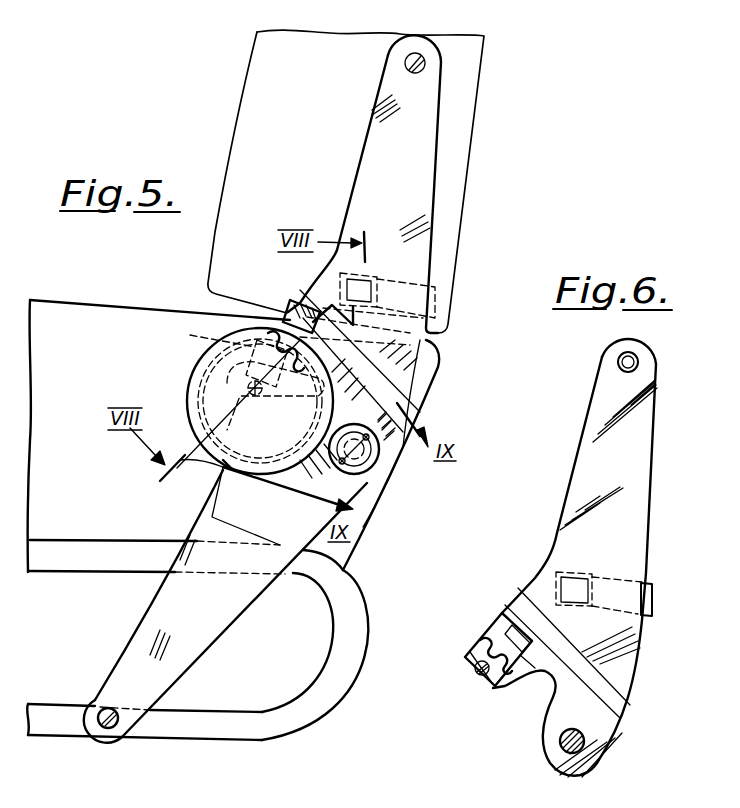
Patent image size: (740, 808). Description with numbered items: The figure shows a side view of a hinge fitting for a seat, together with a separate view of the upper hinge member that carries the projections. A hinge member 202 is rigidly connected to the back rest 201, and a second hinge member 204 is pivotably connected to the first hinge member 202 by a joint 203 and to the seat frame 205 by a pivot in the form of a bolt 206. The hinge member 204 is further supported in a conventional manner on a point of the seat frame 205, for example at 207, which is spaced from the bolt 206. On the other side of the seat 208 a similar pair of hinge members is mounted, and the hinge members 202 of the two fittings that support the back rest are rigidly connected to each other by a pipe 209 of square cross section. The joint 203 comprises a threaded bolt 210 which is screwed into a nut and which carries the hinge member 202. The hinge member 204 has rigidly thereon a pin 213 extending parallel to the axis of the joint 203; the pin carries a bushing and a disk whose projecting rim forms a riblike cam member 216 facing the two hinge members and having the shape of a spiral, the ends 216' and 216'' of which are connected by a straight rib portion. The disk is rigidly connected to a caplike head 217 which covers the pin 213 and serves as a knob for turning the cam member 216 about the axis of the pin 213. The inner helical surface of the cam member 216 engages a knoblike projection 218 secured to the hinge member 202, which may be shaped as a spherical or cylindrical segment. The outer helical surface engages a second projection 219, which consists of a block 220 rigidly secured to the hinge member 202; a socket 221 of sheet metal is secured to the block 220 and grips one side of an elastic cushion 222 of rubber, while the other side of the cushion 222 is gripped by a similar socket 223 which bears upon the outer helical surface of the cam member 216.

In FIG. 5, the back rest 201 is at (255, 115).
In FIG. 5, the hinge member 202 is at (420, 145).
In FIG. 6, the hinge member 202 is at (590, 452).
In FIG. 5, the joint 203 is at (388, 470).
In FIG. 5, the hinge member 204 is at (230, 615).
In FIG. 5, the seat frame 205 is at (238, 712).
In FIG. 5, the bolt 206 is at (108, 733).
In FIG. 5, the support point 207 is at (348, 563).
In FIG. 5, the seat 208 is at (95, 318).
In FIG. 5, the pipe 209 is at (373, 285).
In FIG. 6, the pipe 209 is at (585, 578).
In FIG. 6, the threaded bolt 210 is at (560, 741).
In FIG. 5, the pin 213 is at (259, 396).
In FIG. 5, the riblike cam member 216 is at (241, 403).
In FIG. 5, the end of cam member 216' is at (269, 425).
In FIG. 5, the end of cam member 216'' is at (362, 363).
In FIG. 5, the caplike head 217 is at (225, 468).
In FIG. 5, the knoblike projection 218 is at (225, 342).
In FIG. 6, the knoblike projection 218 is at (480, 671).
In FIG. 5, the second projection 219 is at (265, 325).
In FIG. 6, the second projection 219 is at (483, 636).
In FIG. 6, the block 220 is at (513, 625).
In FIG. 6, the socket 221 is at (505, 630).
In FIG. 6, the elastic cushion 222 is at (518, 650).
In FIG. 6, the socket 223 is at (466, 656).